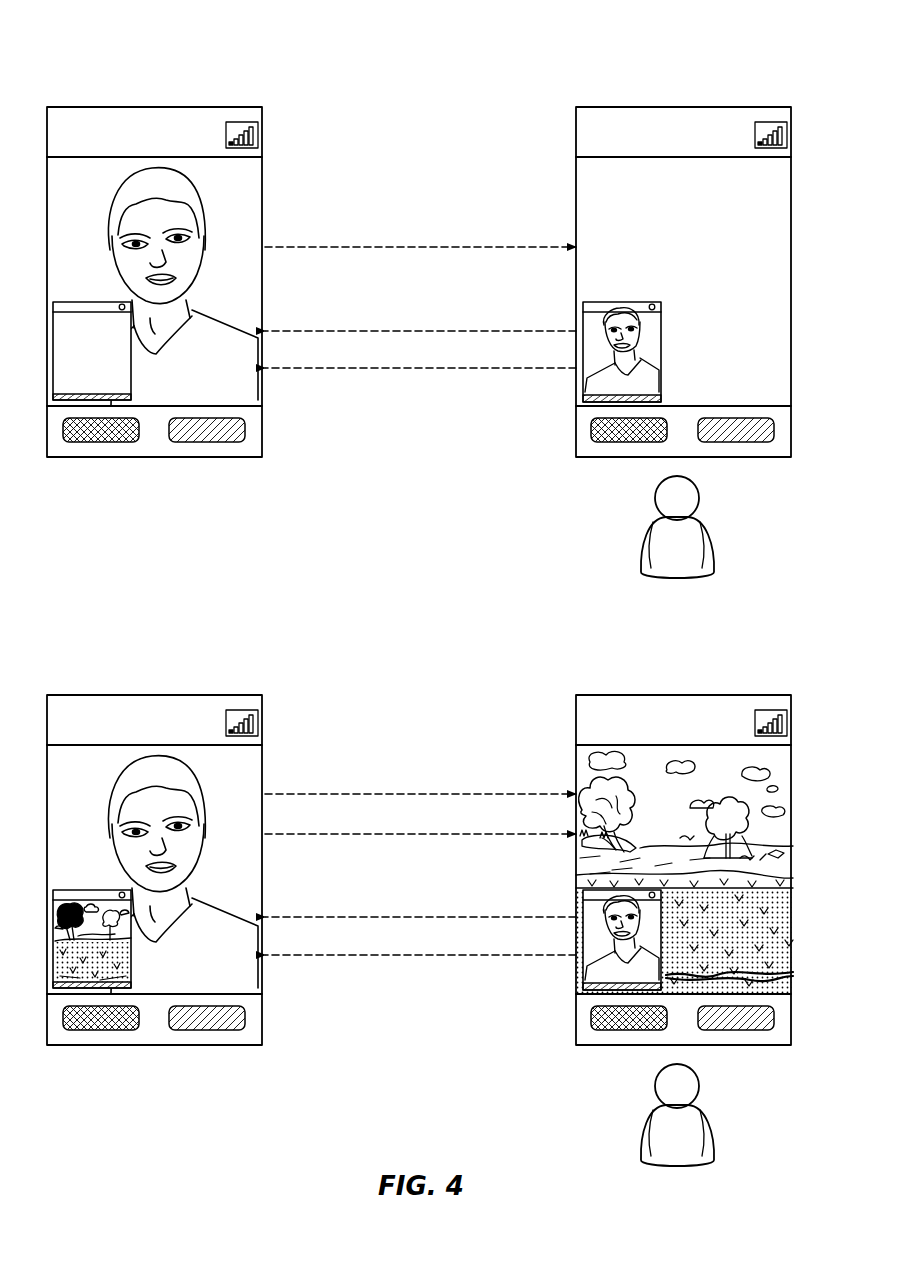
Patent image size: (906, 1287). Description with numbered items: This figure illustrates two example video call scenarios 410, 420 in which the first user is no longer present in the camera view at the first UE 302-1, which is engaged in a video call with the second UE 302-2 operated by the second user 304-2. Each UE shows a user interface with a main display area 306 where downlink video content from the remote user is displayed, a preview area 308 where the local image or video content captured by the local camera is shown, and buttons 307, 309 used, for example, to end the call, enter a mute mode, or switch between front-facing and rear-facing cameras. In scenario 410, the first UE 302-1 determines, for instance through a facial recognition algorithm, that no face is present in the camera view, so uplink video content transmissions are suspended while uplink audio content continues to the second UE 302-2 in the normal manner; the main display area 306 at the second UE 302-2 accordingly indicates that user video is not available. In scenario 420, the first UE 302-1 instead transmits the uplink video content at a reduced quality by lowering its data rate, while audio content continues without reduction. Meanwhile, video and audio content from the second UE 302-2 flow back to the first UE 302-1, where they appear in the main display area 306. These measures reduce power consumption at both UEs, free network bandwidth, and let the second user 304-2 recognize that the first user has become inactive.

The example scenario 410 is at (117, 76).
The example scenario 420 is at (117, 636).
The first UE 302-1 is at (213, 107).
The second UE 302-2 is at (688, 107).
The second user 304-2 is at (640, 541).
The main display area 306 is at (576, 163).
The button 307 is at (100, 433).
The preview area 308 is at (130, 370).
The button 309 is at (213, 430).